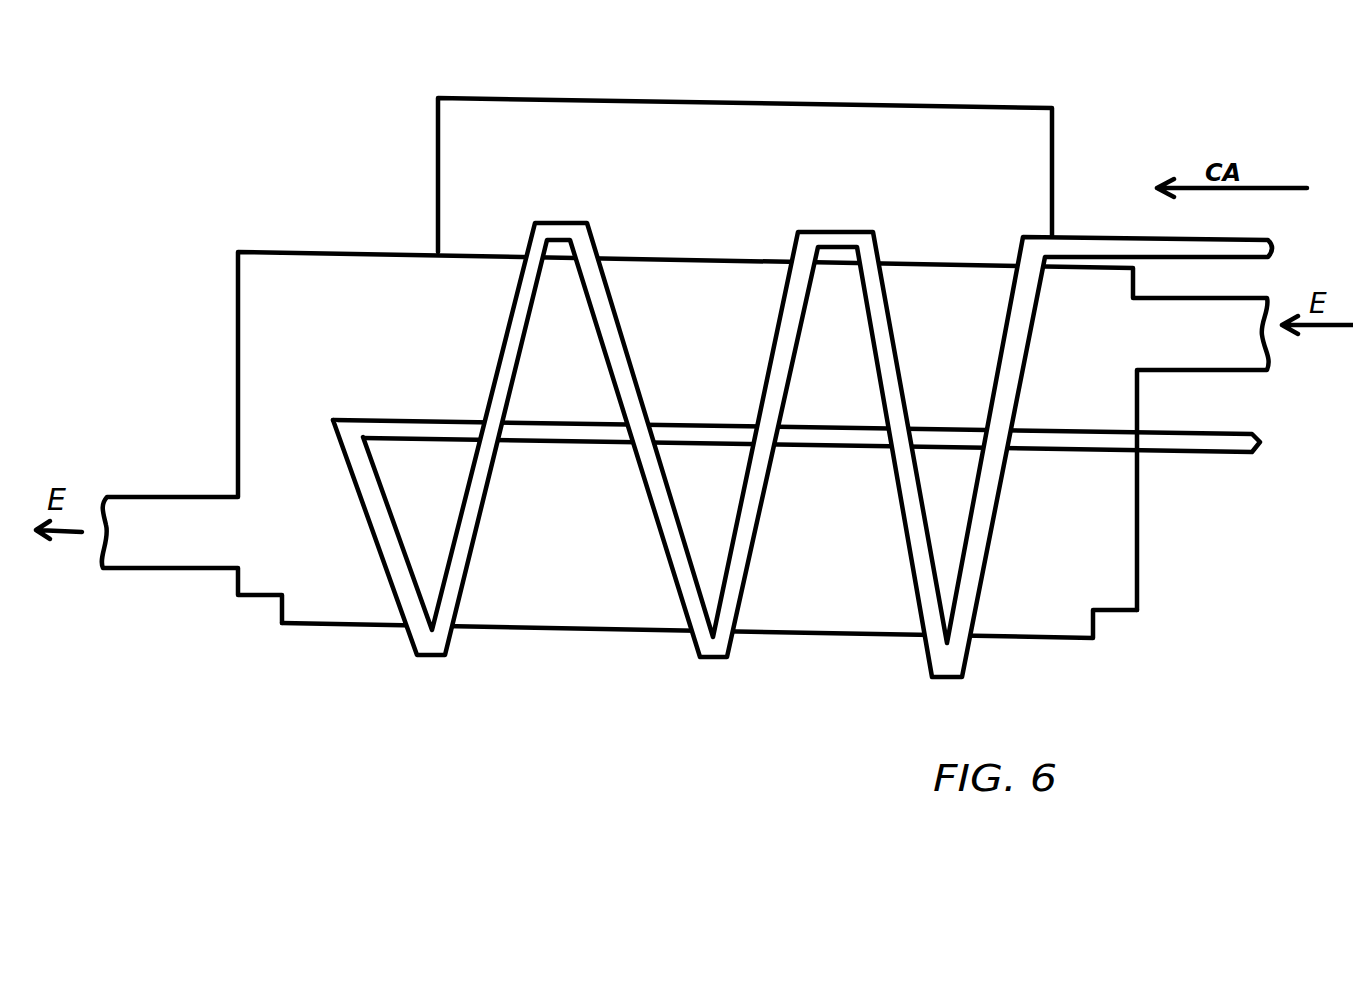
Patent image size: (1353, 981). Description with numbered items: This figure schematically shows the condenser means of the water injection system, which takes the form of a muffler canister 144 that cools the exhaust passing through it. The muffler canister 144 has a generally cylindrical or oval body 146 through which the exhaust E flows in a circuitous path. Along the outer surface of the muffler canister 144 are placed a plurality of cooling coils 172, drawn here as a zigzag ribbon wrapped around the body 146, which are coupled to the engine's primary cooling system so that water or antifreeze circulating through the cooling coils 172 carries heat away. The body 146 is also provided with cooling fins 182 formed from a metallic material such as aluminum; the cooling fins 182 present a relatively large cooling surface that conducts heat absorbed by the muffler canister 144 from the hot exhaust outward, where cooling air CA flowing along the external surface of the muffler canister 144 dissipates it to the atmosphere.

The muffler canister 144 is at (1098, 166).
The body 146 is at (1092, 645).
The cooling coils 172 is at (615, 322).
The cooling fins 182 is at (767, 121).